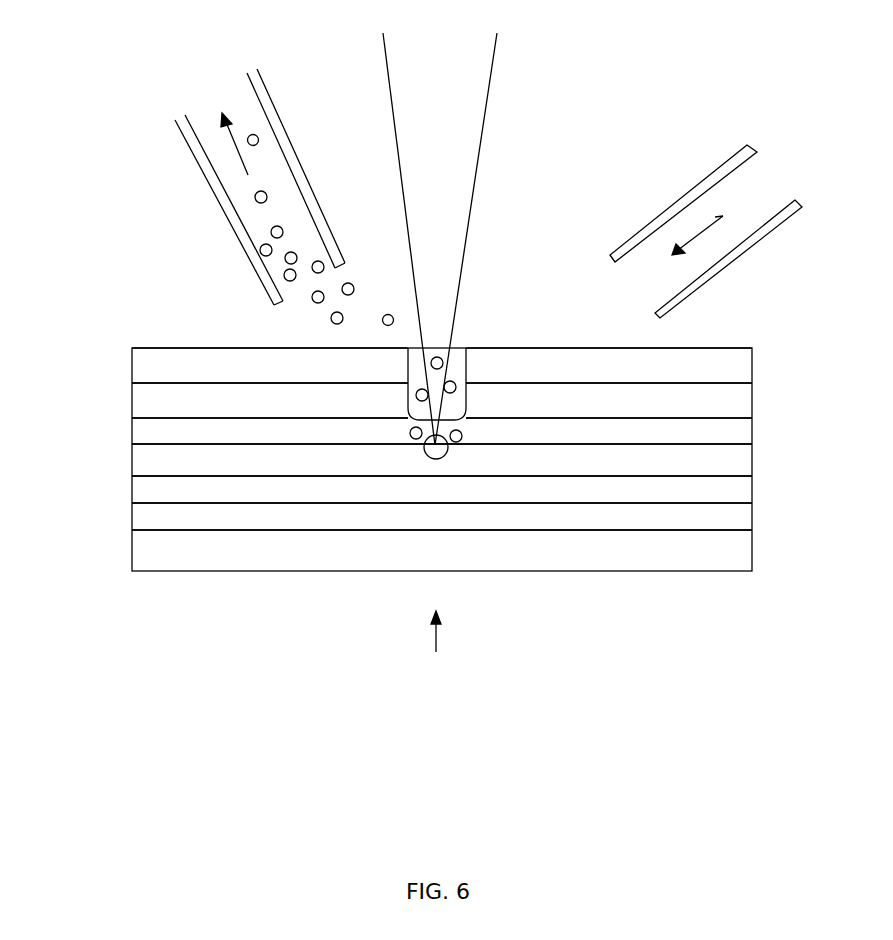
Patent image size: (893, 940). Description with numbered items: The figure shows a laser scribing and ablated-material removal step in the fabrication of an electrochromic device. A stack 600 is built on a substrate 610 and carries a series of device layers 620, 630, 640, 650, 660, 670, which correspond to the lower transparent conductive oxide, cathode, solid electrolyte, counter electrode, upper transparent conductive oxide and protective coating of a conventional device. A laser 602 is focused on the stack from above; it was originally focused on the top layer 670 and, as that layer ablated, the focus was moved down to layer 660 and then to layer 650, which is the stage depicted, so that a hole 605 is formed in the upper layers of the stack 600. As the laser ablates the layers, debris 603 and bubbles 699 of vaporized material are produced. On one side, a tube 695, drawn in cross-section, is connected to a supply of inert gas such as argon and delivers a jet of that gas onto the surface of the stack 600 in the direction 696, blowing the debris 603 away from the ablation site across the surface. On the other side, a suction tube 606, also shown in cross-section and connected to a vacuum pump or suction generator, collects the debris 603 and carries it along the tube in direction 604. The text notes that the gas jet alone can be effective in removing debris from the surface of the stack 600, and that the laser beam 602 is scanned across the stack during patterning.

The stack 600 is at (438, 652).
The laser 602 is at (467, 229).
The debris 603 is at (256, 134).
The direction 604 is at (218, 123).
The hole 605 is at (458, 360).
The suction tube 606 is at (237, 228).
The substrate 610 is at (318, 560).
The layer 620 is at (732, 517).
The layer 630 is at (137, 490).
The layer 640 is at (737, 458).
The layer 650 is at (138, 430).
The layer 660 is at (732, 400).
The layer 670 is at (137, 365).
The tube 695 is at (720, 268).
The direction 696 is at (715, 217).
The bubbles 699 is at (445, 453).